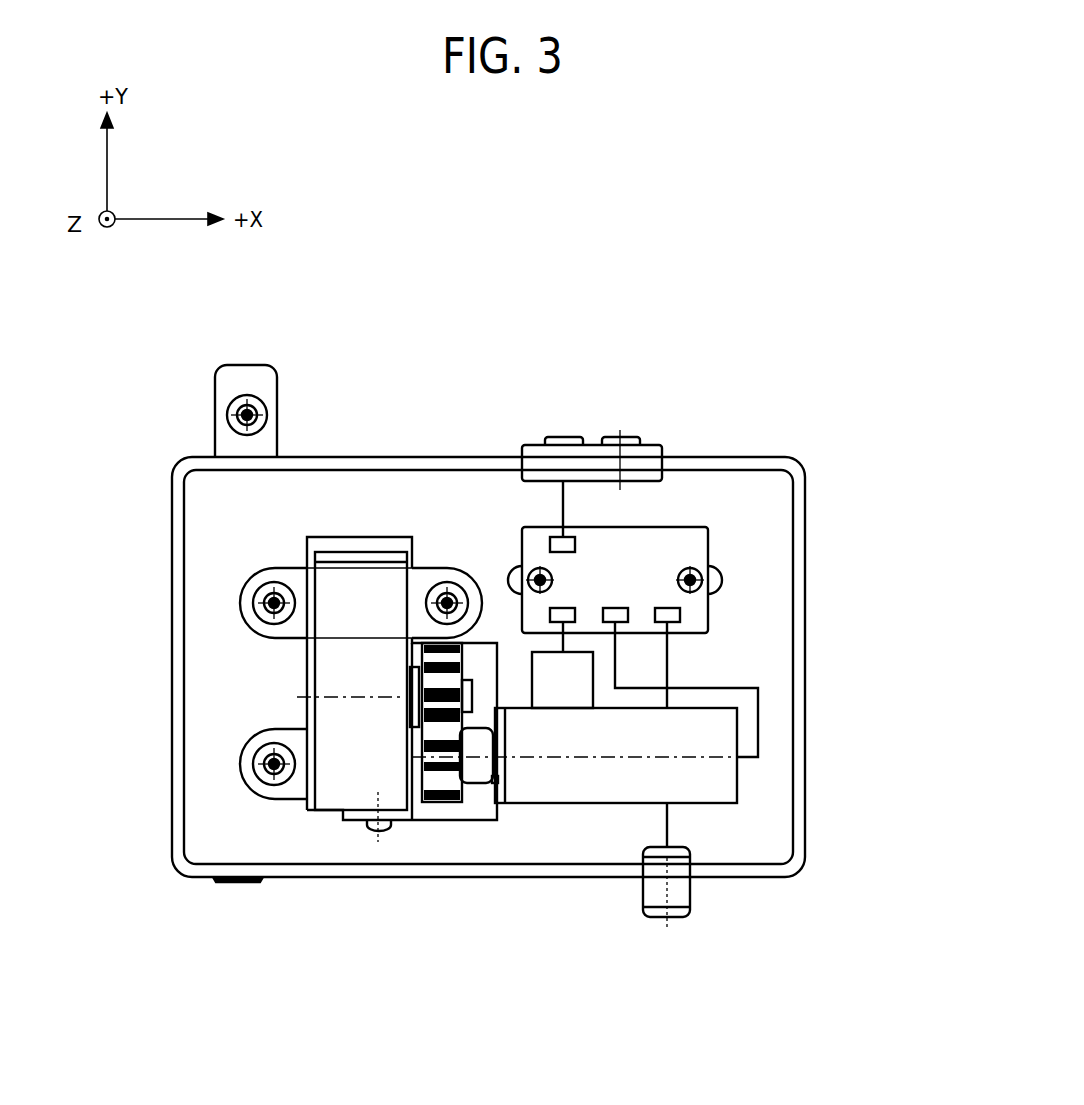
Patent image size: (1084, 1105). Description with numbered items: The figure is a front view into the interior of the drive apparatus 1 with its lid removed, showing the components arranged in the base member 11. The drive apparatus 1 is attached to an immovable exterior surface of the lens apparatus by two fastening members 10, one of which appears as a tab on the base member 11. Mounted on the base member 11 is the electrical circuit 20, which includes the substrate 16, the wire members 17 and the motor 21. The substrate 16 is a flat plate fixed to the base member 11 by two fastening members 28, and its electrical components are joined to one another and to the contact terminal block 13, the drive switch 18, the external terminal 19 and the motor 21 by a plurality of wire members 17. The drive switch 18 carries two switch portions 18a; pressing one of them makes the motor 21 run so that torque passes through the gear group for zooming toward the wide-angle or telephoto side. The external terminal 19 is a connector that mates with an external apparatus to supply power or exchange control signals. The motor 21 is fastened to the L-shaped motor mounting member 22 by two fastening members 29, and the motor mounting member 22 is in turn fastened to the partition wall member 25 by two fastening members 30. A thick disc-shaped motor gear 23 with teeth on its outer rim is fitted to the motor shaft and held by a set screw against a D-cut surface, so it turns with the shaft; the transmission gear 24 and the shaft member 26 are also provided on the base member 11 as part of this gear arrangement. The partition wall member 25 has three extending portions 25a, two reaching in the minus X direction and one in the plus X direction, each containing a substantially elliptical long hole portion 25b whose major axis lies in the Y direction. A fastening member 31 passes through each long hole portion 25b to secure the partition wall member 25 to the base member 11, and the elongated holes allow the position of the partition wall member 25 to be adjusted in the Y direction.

The drive apparatus 1 is at (751, 179).
The fastening member 10 is at (248, 412).
The base member 11 is at (765, 497).
The contact terminal block 13 is at (570, 695).
The substrate 16 is at (690, 607).
The wire member 17 is at (560, 537).
The drive switch 18 is at (656, 443).
The switch portion 18a is at (553, 443).
The external terminal 19 is at (677, 887).
The electrical circuit 20 is at (903, 574).
The motor 21 is at (710, 748).
The motor mounting member 22 is at (422, 815).
The motor gear 23 is at (447, 781).
The transmission gear 24 is at (405, 560).
The partition wall member 25 is at (348, 778).
The extending portion 25a is at (280, 573).
The long hole portion 25b is at (262, 582).
The shaft member 26 is at (468, 713).
The fastening member 28 is at (540, 574).
The fastening member 29 is at (497, 781).
The fastening member 30 is at (372, 829).
The fastening member 31 is at (264, 606).